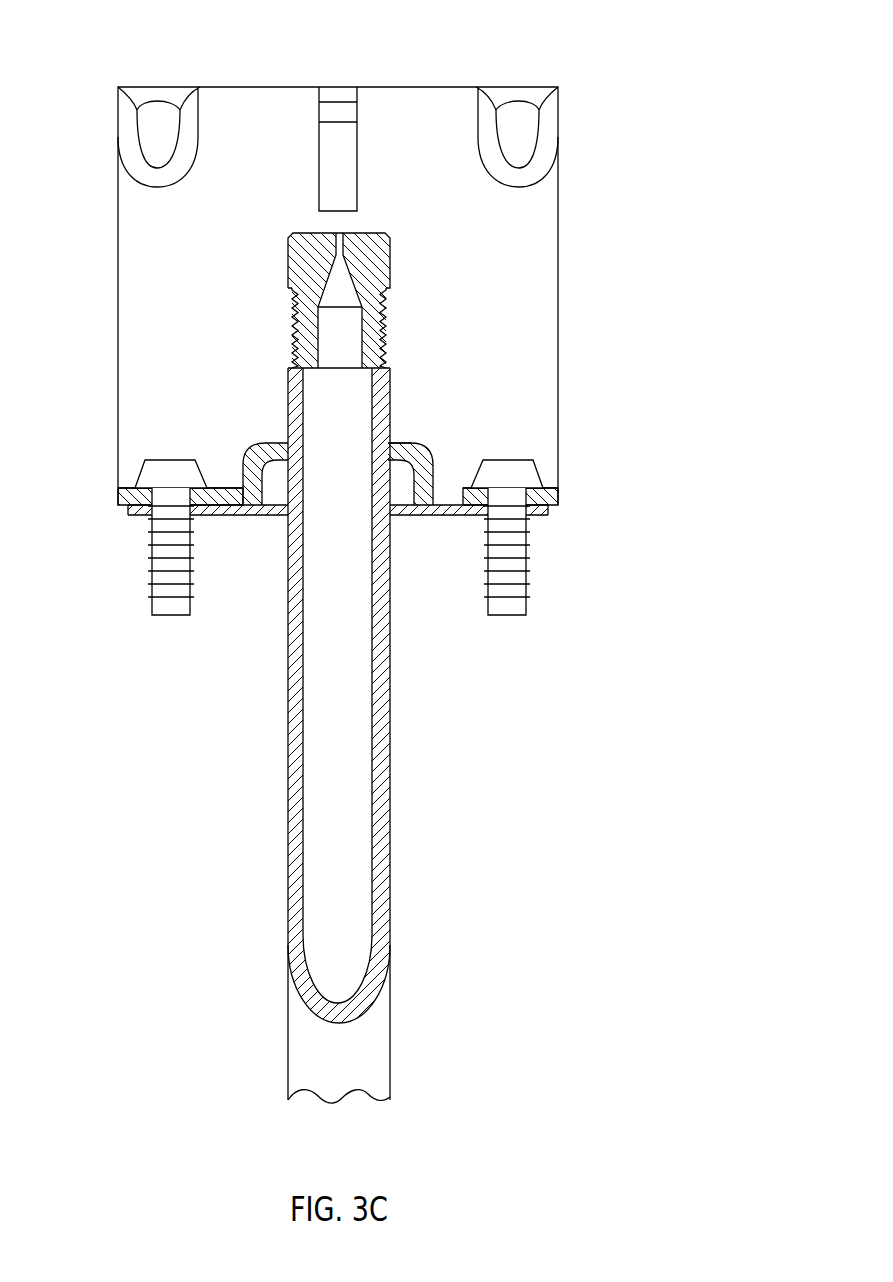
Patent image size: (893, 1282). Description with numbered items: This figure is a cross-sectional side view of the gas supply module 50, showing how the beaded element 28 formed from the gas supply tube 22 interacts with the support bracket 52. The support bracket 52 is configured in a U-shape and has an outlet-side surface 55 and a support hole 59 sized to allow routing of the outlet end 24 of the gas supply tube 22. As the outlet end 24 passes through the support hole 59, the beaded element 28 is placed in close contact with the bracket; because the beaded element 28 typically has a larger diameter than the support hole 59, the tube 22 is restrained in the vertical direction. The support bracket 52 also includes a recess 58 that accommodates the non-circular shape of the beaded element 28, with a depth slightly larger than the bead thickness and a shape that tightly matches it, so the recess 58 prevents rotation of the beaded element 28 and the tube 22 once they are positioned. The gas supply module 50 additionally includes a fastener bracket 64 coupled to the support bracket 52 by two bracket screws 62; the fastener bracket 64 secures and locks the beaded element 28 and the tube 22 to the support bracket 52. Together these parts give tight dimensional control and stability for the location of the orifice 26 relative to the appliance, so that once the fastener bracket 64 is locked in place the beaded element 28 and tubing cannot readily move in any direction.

The gas supply tube 22 is at (391, 745).
The outlet end 24 is at (291, 366).
The orifice 26 is at (288, 243).
The beaded element 28 is at (462, 454).
The gas supply module 50 is at (690, 332).
The support bracket 52 is at (540, 74).
The outlet-side surface 55 is at (140, 87).
The recess 58 is at (248, 447).
The support hole 59 is at (394, 440).
The bracket screws 62 is at (143, 462).
The fastener bracket 64 is at (538, 515).